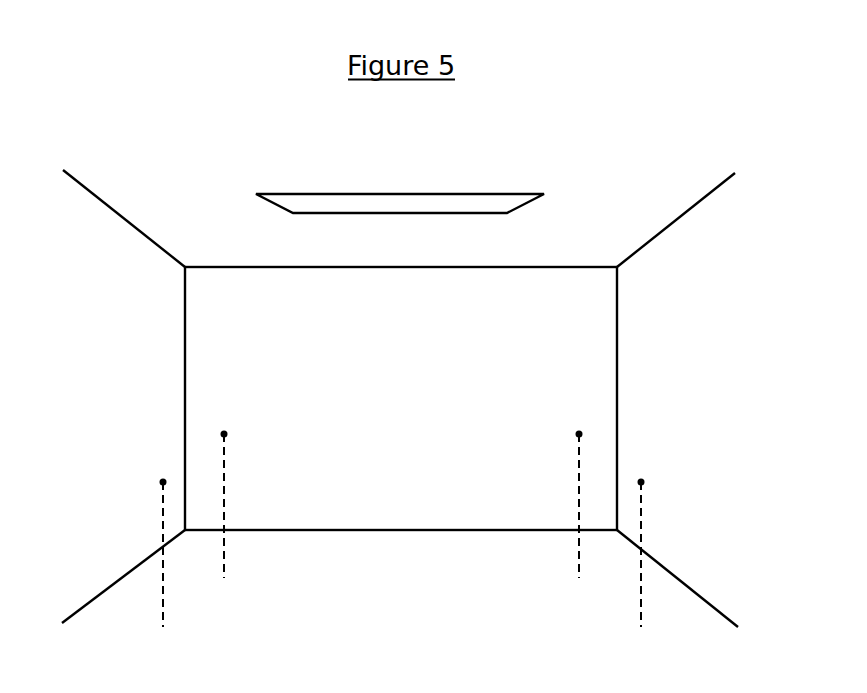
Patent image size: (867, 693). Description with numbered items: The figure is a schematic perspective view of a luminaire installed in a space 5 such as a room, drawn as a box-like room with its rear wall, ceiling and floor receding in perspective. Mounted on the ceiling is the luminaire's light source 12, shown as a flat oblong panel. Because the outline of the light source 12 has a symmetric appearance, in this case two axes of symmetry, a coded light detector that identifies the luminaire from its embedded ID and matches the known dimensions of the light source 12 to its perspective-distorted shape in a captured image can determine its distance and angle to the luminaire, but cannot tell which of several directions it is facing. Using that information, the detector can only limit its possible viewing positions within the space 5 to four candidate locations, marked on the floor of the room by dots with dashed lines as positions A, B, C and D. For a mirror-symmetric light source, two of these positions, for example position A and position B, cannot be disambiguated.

The space 5 is at (678, 352).
The light source 12 is at (447, 194).
The candidate location A is at (224, 494).
The candidate location B is at (162, 543).
The candidate location C is at (641, 543).
The candidate location D is at (579, 494).